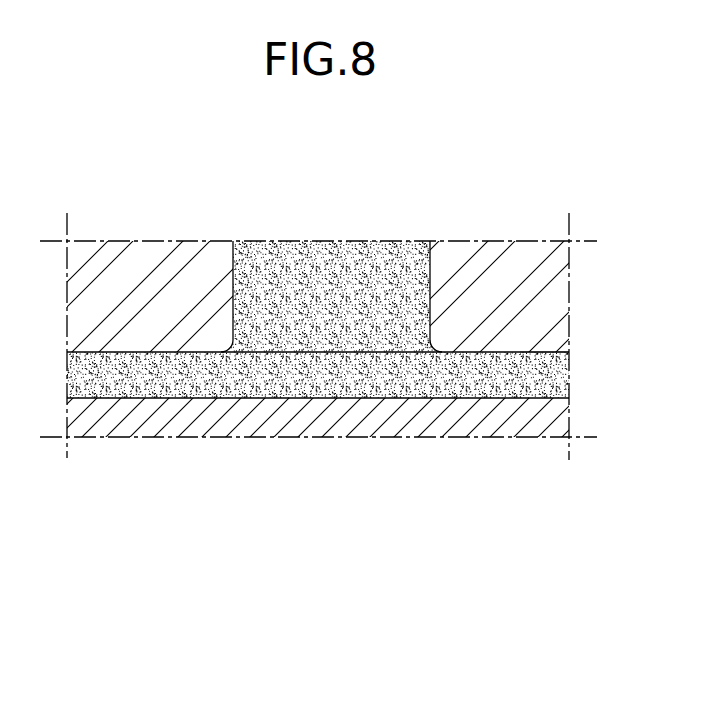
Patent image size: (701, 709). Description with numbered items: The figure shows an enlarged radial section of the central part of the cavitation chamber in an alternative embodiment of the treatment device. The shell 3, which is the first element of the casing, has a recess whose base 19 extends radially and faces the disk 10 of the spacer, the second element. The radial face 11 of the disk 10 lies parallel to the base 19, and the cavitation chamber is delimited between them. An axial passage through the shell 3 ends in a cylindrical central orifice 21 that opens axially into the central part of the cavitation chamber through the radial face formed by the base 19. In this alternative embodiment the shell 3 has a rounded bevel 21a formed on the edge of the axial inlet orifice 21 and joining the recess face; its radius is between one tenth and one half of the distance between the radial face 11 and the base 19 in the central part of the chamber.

The shell 3 is at (150, 252).
The disk 10 is at (274, 425).
The radial face 11 is at (93, 398).
The base 19 is at (540, 355).
The central orifice 21 is at (426, 262).
The rounded bevel 21a is at (430, 352).